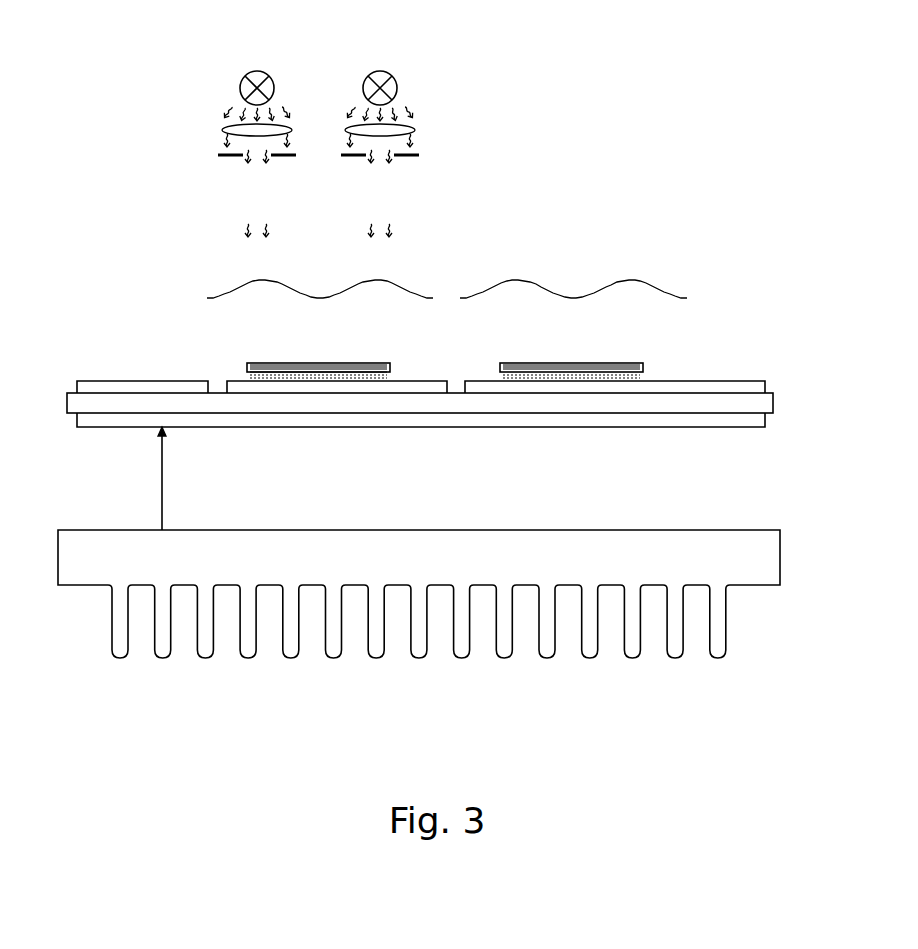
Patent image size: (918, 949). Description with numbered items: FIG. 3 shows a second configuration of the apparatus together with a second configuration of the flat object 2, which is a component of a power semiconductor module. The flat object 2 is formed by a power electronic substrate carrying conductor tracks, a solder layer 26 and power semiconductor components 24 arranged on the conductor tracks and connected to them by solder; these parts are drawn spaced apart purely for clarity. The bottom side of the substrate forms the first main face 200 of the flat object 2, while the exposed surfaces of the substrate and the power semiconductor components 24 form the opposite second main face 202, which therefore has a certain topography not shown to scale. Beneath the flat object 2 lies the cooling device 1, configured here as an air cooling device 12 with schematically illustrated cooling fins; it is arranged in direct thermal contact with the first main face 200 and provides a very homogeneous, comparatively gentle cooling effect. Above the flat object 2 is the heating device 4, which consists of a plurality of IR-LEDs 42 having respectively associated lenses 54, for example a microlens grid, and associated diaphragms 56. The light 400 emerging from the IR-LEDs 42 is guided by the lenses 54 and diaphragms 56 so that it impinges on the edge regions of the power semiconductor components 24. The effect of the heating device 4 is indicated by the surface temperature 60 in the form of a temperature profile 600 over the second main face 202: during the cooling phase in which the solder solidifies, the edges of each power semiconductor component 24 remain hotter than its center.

The cooling device 1 is at (419, 542).
The air cooling device 12 is at (558, 540).
The flat object 2 is at (727, 387).
The first main face 200 is at (420, 430).
The second main face 202 is at (82, 380).
The power semiconductor components 24 is at (549, 368).
The solder layer 26 is at (593, 377).
The heating device 4 is at (364, 117).
The IR-LEDs 42 is at (258, 78).
The lenses 54 is at (389, 135).
The diaphragms 56 is at (405, 160).
The light 400 is at (392, 224).
The surface temperature 60 is at (447, 266).
The temperature profile 600 is at (540, 287).